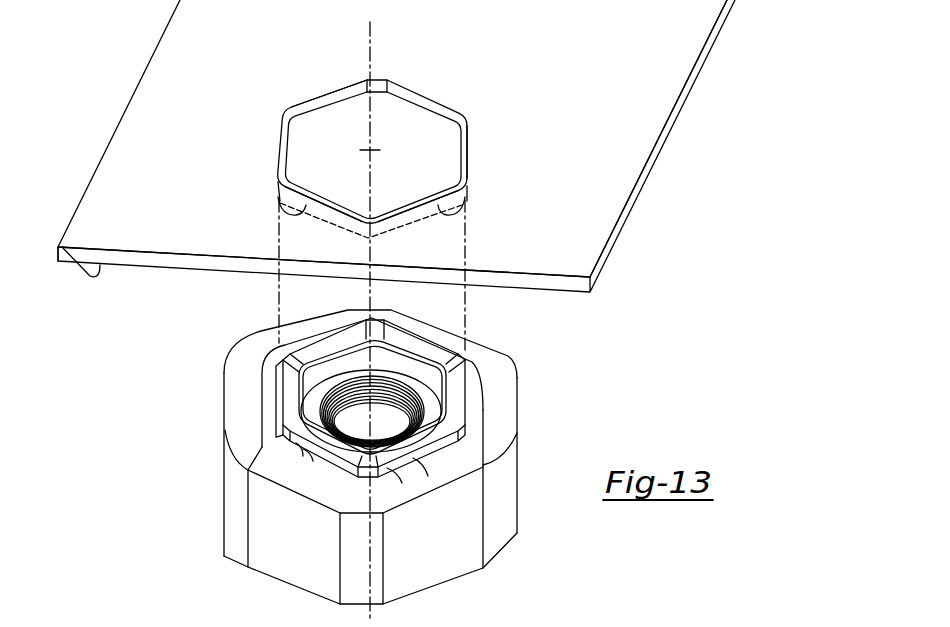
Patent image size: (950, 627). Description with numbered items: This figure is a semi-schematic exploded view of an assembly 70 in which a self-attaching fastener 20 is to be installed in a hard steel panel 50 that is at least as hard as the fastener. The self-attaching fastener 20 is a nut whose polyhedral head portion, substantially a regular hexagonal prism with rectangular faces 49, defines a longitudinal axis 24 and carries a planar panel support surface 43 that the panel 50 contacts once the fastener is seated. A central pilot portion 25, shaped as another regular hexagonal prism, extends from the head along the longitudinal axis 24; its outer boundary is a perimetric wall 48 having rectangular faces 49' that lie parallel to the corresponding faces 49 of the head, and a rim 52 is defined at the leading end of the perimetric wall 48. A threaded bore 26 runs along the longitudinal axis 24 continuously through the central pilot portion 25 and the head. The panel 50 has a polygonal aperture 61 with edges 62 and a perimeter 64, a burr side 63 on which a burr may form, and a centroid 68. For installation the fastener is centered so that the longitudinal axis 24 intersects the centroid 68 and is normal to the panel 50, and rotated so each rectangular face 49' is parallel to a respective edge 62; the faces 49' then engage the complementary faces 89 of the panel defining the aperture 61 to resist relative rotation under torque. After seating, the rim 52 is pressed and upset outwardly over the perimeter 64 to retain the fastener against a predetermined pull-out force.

The self-attaching fastener 20 is at (512, 578).
The longitudinal axis 24 is at (372, 42).
The central pilot portion 25 is at (413, 457).
The threaded bore 26 is at (353, 423).
The planar panel support surface 43 is at (498, 423).
The perimetric wall 48 is at (267, 450).
The rectangular face 49 is at (351, 493).
The rectangular face 49' is at (347, 488).
The hard steel panel 50 is at (622, 193).
The rim 52 is at (463, 383).
The aperture 61 is at (416, 103).
The edge 62 is at (308, 107).
The burr side 63 is at (62, 246).
The perimeter 64 is at (471, 160).
The centroid 68 is at (372, 152).
The assembly 70 is at (730, 134).
The complementary faces 89 is at (279, 198).